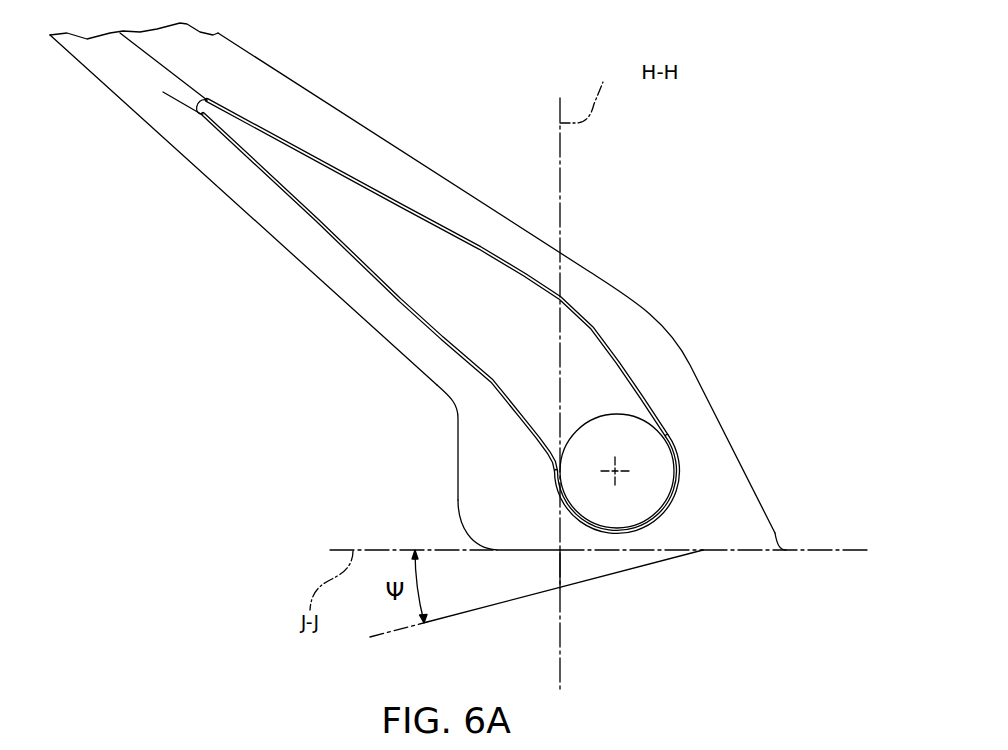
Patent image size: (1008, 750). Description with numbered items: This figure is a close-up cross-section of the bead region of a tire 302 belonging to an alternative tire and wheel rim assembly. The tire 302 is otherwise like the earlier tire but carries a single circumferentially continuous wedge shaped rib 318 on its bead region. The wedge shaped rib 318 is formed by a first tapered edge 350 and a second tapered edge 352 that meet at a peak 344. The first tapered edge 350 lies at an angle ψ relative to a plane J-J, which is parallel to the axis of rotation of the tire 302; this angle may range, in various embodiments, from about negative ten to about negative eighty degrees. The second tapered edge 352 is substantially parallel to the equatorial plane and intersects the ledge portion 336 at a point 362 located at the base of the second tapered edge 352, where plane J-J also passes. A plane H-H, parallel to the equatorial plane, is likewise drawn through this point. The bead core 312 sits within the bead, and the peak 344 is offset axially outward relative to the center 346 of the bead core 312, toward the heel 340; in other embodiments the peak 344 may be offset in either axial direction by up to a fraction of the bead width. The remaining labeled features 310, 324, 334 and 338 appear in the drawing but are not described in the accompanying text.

The tire 302 is at (356, 364).
The outer wrapping sheet 310 is at (636, 190).
The bead core 312 is at (626, 440).
The single circumferentially continuous wedge shaped rib 318 is at (623, 560).
The thin folded strip 324 is at (595, 373).
The side wall 334 is at (490, 477).
The ledge portion 336 is at (621, 543).
The foot of outer sheet 338 is at (786, 549).
The heel 340 is at (470, 538).
The peak 344 is at (562, 586).
The center of bead core 346 is at (615, 466).
The first tapered edge 350 is at (618, 578).
The second tapered edge 352 is at (558, 567).
The point 362 is at (558, 551).